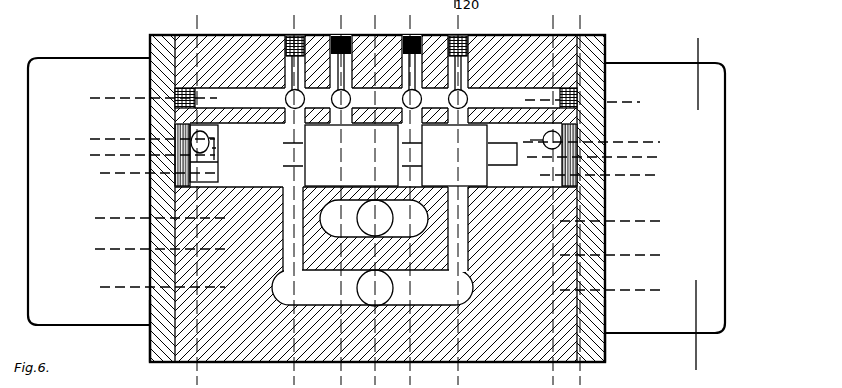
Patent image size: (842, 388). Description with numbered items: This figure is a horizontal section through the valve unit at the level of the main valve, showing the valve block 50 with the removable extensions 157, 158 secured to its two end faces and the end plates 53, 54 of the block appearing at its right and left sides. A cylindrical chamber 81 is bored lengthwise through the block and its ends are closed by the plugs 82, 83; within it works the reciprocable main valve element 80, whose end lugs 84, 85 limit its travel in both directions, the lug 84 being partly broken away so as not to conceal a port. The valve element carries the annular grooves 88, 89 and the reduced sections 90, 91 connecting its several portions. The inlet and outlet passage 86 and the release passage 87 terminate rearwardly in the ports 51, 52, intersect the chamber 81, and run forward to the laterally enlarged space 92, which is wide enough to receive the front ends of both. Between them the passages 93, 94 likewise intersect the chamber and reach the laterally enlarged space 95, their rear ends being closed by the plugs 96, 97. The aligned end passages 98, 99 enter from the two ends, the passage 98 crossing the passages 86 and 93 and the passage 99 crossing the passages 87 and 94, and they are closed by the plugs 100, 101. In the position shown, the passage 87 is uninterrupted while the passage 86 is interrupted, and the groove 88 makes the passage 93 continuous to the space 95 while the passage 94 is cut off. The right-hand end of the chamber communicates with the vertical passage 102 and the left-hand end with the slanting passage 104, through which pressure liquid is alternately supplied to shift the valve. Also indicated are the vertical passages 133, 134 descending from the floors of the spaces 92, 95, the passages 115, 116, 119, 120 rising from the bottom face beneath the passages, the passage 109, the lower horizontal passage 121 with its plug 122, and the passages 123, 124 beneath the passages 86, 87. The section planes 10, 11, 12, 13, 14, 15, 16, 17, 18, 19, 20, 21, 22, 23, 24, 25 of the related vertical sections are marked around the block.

The valve block 50 is at (376, 198).
The port 51 is at (470, 35).
The port 52 is at (268, 33).
The right side plate 53 is at (590, 324).
The left side plate 54 is at (157, 307).
The main valve element 80 is at (255, 139).
The cylindrical chamber 81 is at (510, 127).
The plug 82 is at (576, 187).
The plug 83 is at (173, 180).
The end lug 84 is at (498, 159).
The end lug 85 is at (175, 196).
The inlet and outlet passage 86 is at (469, 71).
The release passage 87 is at (287, 72).
The annular groove 88 is at (410, 178).
The annular groove 89 is at (288, 173).
The reduced section 90 is at (413, 156).
The reduced section 91 is at (290, 157).
The laterally enlarged space 92 is at (435, 307).
The forwardly extending passage 93 is at (373, 73).
The forwardly extending passage 94 is at (343, 66).
The laterally enlarged space 95 is at (398, 234).
The plug 96 is at (435, 35).
The plug 97 is at (321, 35).
The passage 98 is at (520, 96).
The passage 99 is at (242, 88).
The plug 100 is at (585, 80).
The plug 101 is at (153, 58).
The vertical passage 102 is at (593, 100).
The downwardly slanting passage 104 is at (177, 134).
The passage 109 is at (502, 382).
The vertical passage 115 is at (365, 98).
The vertical passage 116 is at (345, 102).
The vertical passage 119 is at (450, 92).
The vertical passage 120 is at (303, 84).
The horizontal passage 121 is at (411, 0).
The plug 122 is at (371, 0).
The horizontal passage 123 is at (338, 8).
The horizontal passage 124 is at (292, 0).
The vertical passage 133 is at (363, 301).
The vertical passage 134 is at (366, 232).
The removable extension 157 is at (665, 198).
The removable extension 158 is at (89, 191).
The section line 10 is at (647, 88).
The section line 11 is at (627, 152).
The section line 12 is at (638, 166).
The section line 13 is at (647, 190).
The section line 14 is at (647, 235).
The section line 15 is at (647, 272).
The section line 16 is at (647, 308).
The section line 17 is at (715, 355).
The section line 18 is at (592, 368).
The section line 19 is at (560, 368).
The section line 20 is at (475, 368).
The section line 21 is at (420, 368).
The section line 22 is at (385, 368).
The section line 23 is at (350, 368).
The section line 24 is at (307, 368).
The section line 25 is at (217, 368).